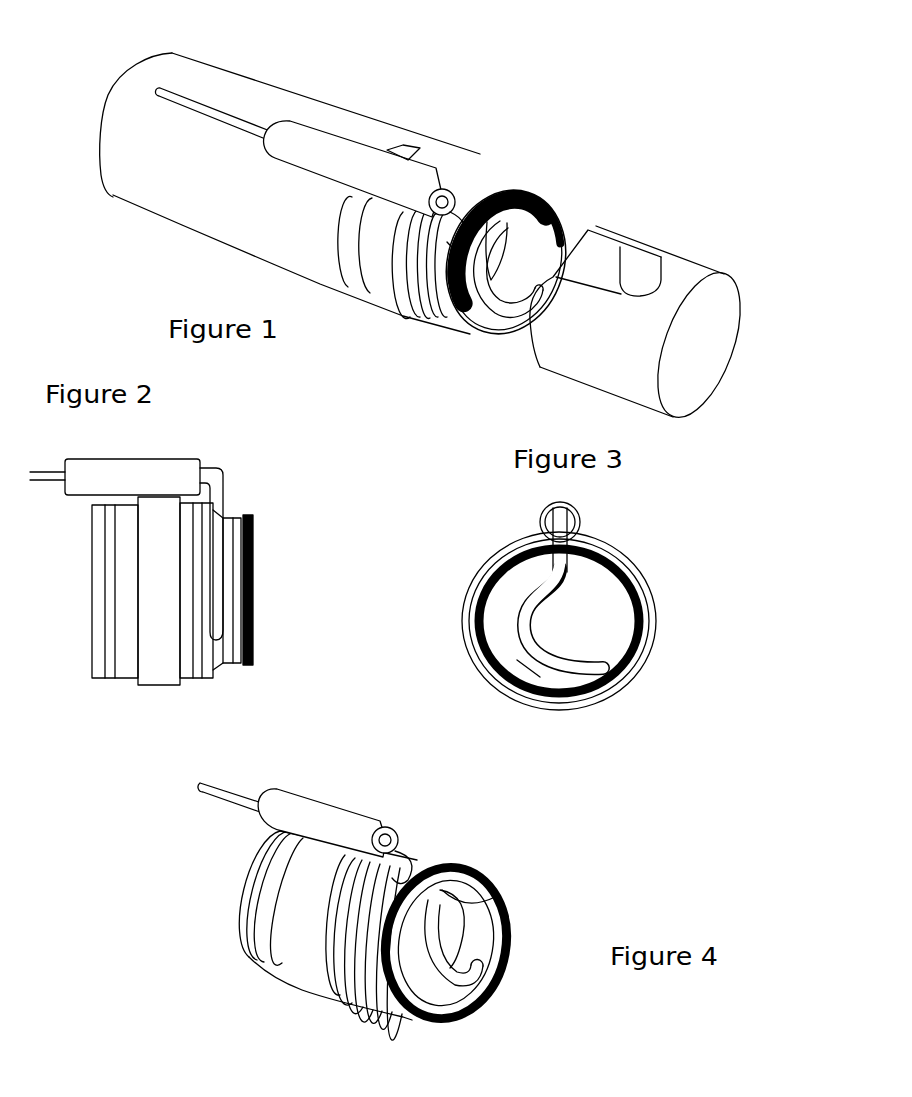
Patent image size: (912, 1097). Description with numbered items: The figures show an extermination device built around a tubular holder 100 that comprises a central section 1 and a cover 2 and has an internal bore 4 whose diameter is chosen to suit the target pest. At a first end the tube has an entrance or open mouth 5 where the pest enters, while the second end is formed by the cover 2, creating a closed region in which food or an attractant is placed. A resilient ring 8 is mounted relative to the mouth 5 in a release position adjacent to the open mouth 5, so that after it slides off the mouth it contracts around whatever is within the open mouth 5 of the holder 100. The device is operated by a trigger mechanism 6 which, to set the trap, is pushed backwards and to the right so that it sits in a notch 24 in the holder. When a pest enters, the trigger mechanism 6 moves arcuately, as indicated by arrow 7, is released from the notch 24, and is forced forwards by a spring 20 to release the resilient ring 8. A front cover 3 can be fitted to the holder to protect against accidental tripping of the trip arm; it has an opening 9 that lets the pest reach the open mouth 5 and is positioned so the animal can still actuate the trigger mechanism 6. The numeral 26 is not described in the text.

In FIG. 1, the holder 100 is at (420, 100).
In FIG. 1, the central section 1 is at (530, 142).
In FIG. 2, the central section 1 is at (110, 712).
In FIG. 4, the central section 1 is at (455, 796).
In FIG. 1, the cover 2 is at (194, 64).
In FIG. 1, the front cover 3 is at (636, 235).
In FIG. 3, the internal bore 4 is at (627, 607).
In FIG. 4, the internal bore 4 is at (481, 950).
In FIG. 2, the open mouth 5 is at (257, 550).
In FIG. 2, the trigger mechanism 6 is at (227, 485).
In FIG. 3, the trigger mechanism 6 is at (540, 637).
In FIG. 3, the arrow 7 is at (553, 703).
In FIG. 1, the resilient ring 8 is at (460, 336).
In FIG. 2, the resilient ring 8 is at (247, 663).
In FIG. 3, the resilient ring 8 is at (465, 633).
In FIG. 4, the resilient ring 8 is at (432, 1020).
In FIG. 1, the opening 9 is at (720, 384).
In FIG. 4, the spring 20 is at (338, 804).
In FIG. 4, the notch 24 is at (463, 850).
In FIG. 4, the slot 26 is at (505, 897).